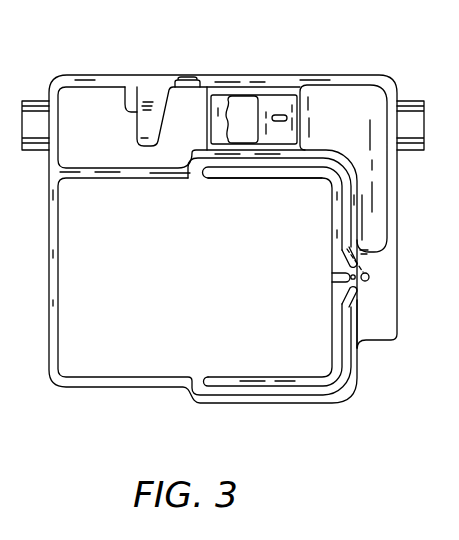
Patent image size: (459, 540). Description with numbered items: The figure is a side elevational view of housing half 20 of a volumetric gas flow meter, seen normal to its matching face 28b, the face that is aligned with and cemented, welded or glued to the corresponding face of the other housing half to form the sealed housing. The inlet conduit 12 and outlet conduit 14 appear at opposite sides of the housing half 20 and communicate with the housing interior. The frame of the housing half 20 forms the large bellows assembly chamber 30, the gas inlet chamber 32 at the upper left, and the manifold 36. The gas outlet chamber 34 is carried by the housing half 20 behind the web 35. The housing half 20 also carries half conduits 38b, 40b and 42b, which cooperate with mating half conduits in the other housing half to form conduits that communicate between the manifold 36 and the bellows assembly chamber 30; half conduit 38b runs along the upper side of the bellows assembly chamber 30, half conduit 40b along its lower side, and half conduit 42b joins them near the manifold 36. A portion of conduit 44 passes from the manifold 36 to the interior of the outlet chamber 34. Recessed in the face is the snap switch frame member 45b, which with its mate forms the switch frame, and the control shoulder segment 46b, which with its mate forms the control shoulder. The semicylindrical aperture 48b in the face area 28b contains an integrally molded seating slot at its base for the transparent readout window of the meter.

The inlet conduit 12 is at (33, 101).
The outlet conduit 14 is at (412, 98).
The housing half 20 is at (222, 73).
The matching face 28b is at (152, 122).
The bellows assembly chamber 30 is at (115, 347).
The gas inlet chamber 32 is at (99, 104).
The gas outlet chamber 34 is at (337, 98).
The web 35 is at (360, 137).
The manifold 36 is at (375, 320).
The half conduit 38b is at (272, 161).
The half conduit 40b is at (218, 389).
The half conduit 42b is at (333, 276).
The conduit 44 is at (370, 275).
The recessed snap switch frame member 45b is at (275, 108).
The control shoulder segment 46b is at (125, 98).
The semicylindrical aperture 48b is at (184, 78).